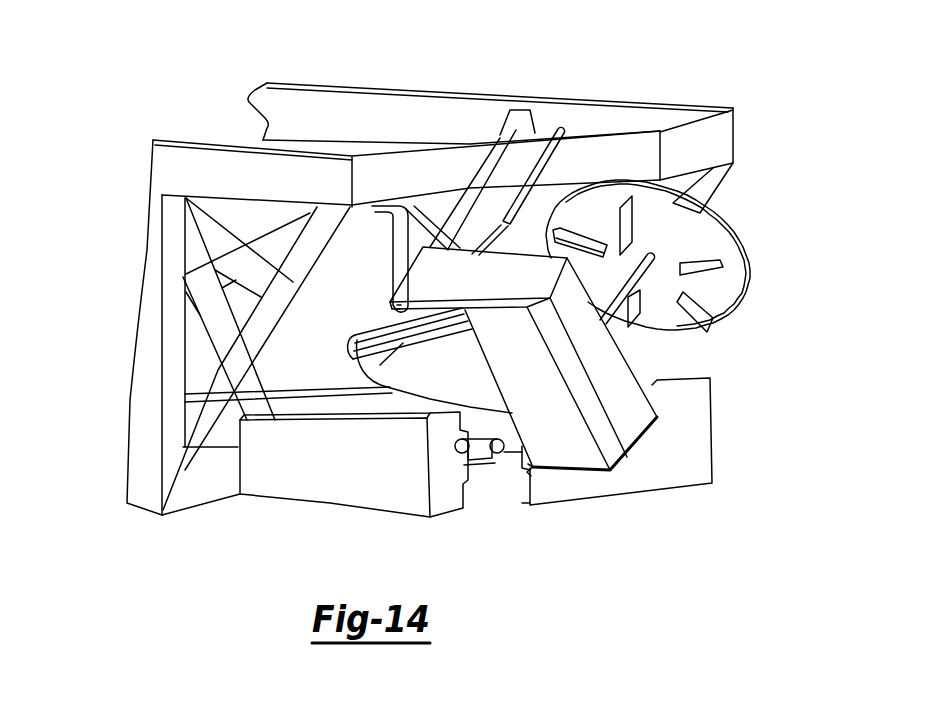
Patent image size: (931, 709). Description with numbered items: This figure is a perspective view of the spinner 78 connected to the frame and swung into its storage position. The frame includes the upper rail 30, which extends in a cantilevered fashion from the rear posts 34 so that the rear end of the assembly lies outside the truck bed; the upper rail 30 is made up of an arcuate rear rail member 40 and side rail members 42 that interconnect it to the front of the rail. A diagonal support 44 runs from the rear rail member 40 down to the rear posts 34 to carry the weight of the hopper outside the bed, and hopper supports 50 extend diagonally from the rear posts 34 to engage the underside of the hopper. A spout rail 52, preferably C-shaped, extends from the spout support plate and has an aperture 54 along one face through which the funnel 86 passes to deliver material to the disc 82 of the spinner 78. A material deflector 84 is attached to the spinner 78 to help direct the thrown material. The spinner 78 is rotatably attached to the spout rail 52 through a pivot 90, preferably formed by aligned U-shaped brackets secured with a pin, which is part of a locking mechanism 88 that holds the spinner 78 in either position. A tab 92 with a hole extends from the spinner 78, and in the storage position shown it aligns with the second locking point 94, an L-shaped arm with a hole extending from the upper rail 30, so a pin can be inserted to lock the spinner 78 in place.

The upper rail 30 is at (497, 93).
The rear posts 34 is at (135, 390).
The rear rail member 40 is at (715, 143).
The side rail members 42 is at (193, 153).
The diagonal support 44 is at (200, 432).
The hopper supports 50 is at (257, 393).
The spout rail 52 is at (690, 482).
The aperture 54 is at (527, 508).
The spinner 78 is at (622, 375).
The disc 82 is at (745, 260).
The material deflector 84 is at (560, 162).
The funnel 86 is at (378, 365).
The locking mechanism 88 is at (477, 472).
The pivot 90 is at (502, 455).
The tab 92 is at (398, 302).
The second locking point 94 is at (388, 290).